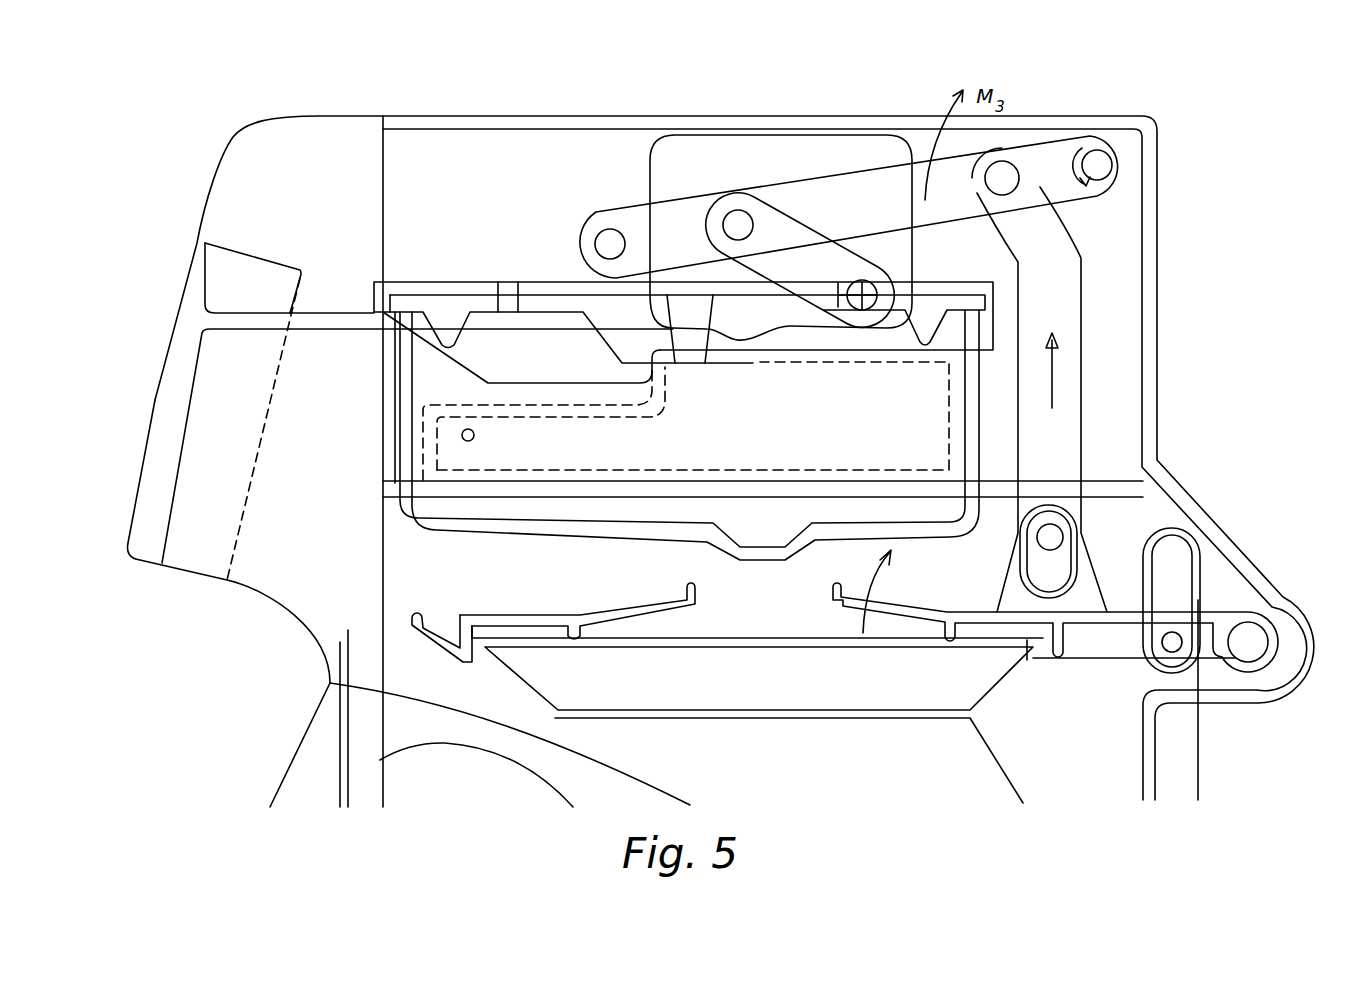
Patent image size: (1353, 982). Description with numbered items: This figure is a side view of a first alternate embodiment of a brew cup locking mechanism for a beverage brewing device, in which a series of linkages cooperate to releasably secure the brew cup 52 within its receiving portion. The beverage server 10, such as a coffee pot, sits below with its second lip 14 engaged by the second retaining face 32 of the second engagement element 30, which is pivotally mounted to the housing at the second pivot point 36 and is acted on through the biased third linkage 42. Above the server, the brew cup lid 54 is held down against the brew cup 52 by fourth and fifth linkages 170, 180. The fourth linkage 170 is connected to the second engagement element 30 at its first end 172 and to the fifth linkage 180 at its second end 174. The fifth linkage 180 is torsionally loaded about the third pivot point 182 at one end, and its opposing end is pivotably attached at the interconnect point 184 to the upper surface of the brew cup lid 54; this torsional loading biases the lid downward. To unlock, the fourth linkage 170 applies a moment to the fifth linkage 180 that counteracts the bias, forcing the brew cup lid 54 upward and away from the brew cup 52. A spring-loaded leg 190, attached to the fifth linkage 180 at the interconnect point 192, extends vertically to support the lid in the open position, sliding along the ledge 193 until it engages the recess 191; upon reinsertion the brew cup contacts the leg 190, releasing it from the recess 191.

The beverage server 10 is at (775, 761).
The second lip 14 is at (775, 696).
The second engagement element 30 is at (520, 615).
The second retaining face 32 is at (478, 628).
The second pivot point 36 is at (1250, 633).
The third linkage 42 is at (1167, 683).
The brew cup 52 is at (403, 377).
The brew cup lid 54 is at (458, 268).
The fourth linkage 170 is at (1073, 372).
The first end 172 is at (1073, 577).
The second end 174 is at (1018, 168).
The fifth linkage 180 is at (877, 187).
The third pivot point 182 is at (1103, 165).
The interconnect point 184 is at (605, 240).
The spring-loaded leg 190 is at (818, 250).
The recess 191 is at (750, 337).
The interconnect point 192 is at (735, 215).
The ledge 193 is at (838, 320).